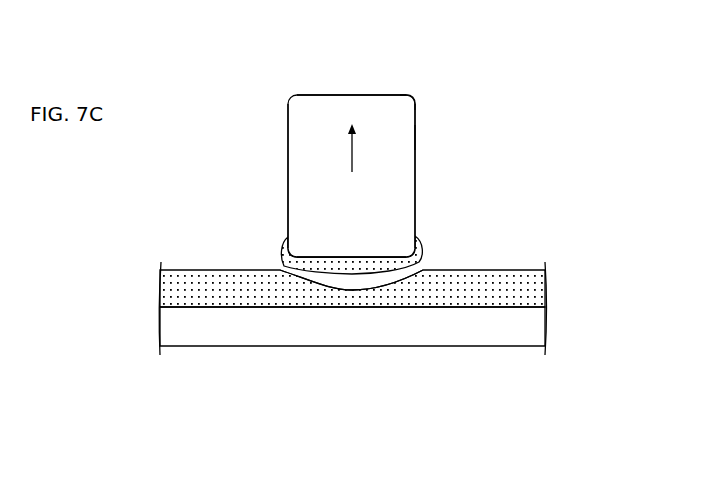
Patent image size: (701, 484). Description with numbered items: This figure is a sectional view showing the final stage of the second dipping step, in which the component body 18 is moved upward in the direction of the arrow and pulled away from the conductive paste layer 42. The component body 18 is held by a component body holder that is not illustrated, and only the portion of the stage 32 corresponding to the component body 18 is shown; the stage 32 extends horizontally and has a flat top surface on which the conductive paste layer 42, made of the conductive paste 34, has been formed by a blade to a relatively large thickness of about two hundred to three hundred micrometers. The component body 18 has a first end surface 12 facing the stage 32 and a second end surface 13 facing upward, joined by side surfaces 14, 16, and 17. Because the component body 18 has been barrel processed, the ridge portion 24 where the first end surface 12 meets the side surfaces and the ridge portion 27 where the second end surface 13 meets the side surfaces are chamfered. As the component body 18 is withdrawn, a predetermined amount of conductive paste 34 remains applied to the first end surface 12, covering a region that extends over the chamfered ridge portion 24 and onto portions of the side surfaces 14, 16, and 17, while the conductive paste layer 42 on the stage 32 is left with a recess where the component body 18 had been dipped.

The first end surface 12 is at (352, 257).
The second end surface 13 is at (351, 95).
The side surface 14 is at (308, 137).
The side surface 16 is at (288, 170).
The side surface 17 is at (415, 175).
The component body 18 is at (420, 136).
The ridge portion 24 is at (288, 240).
The ridge portion 27 is at (415, 97).
The stage 32 is at (538, 327).
The conductive paste 34 is at (470, 292).
The conductive paste layer 42 is at (538, 288).